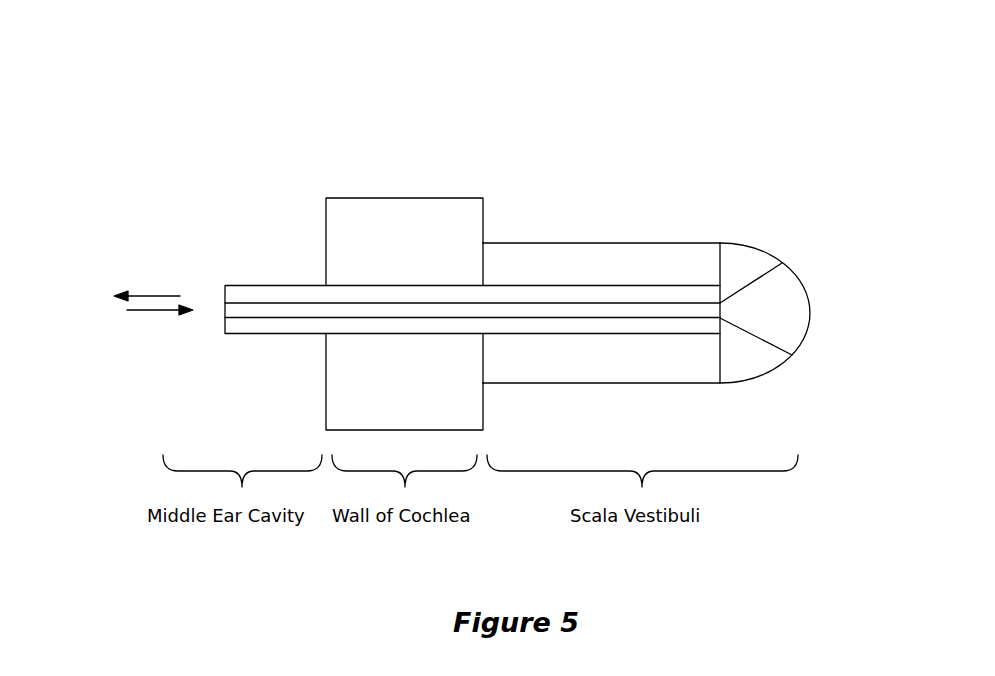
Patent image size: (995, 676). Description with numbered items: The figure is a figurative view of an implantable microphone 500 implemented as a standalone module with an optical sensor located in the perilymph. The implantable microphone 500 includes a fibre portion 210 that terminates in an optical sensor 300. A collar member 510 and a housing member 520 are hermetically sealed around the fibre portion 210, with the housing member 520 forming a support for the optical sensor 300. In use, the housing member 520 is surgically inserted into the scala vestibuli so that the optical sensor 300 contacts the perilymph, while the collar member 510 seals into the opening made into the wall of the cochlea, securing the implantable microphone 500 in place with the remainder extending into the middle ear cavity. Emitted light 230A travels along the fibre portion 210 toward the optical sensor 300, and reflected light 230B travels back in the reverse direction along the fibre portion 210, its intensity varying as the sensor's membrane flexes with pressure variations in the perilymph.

The implantable microphone 500 is at (436, 102).
The collar member 510 is at (358, 198).
The fibre portion 210 is at (288, 284).
The housing member 520 is at (557, 243).
The optical sensor 300 is at (749, 230).
The emitted light 230A is at (147, 284).
The reflected light 230B is at (160, 322).